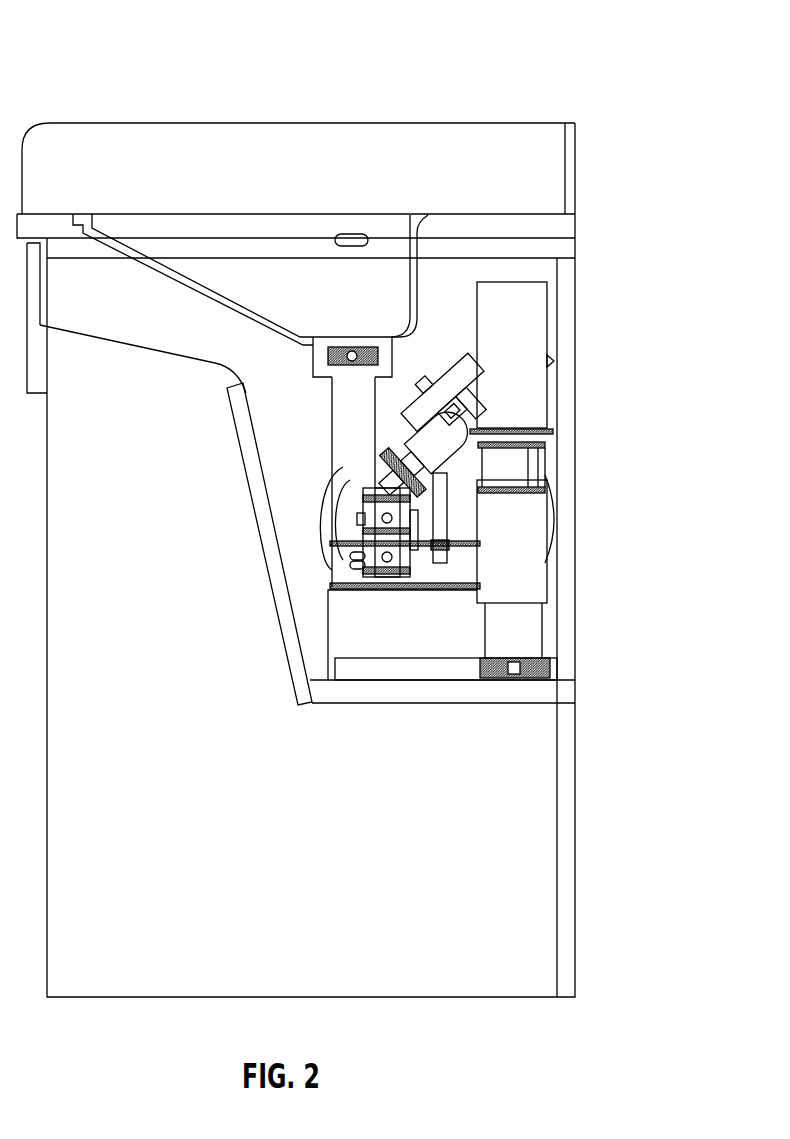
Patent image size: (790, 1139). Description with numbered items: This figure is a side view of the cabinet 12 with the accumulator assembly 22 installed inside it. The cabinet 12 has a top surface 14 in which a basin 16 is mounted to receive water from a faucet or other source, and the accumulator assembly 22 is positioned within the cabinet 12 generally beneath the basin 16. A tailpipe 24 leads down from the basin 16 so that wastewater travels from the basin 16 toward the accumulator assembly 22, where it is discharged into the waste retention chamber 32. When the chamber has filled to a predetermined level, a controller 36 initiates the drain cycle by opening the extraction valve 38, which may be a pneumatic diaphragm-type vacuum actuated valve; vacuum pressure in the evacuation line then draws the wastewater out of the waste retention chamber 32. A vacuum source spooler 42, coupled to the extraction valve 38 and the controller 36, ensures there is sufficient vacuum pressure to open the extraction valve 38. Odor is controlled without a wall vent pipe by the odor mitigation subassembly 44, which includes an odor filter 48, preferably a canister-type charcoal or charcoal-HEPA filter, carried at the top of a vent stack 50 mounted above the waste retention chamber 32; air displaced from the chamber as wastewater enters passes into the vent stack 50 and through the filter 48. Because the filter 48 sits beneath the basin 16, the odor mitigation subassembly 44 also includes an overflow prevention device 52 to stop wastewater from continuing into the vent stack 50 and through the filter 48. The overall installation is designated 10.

The appliance 10 is at (573, 47).
The cabinet 12 is at (580, 806).
The top surface 14 is at (483, 214).
The basin 16 is at (238, 300).
The accumulator assembly 22 is at (311, 624).
The tailpipe 24 is at (334, 417).
The waste retention chamber 32 is at (375, 645).
The controller 36 is at (333, 547).
The extraction valve 38 is at (444, 372).
The vacuum source spooler 42 is at (322, 517).
The odor mitigation subassembly 44 is at (570, 412).
The odor filter 48 is at (533, 335).
The vent stack 50 is at (545, 563).
The overflow prevention device 52 is at (549, 469).